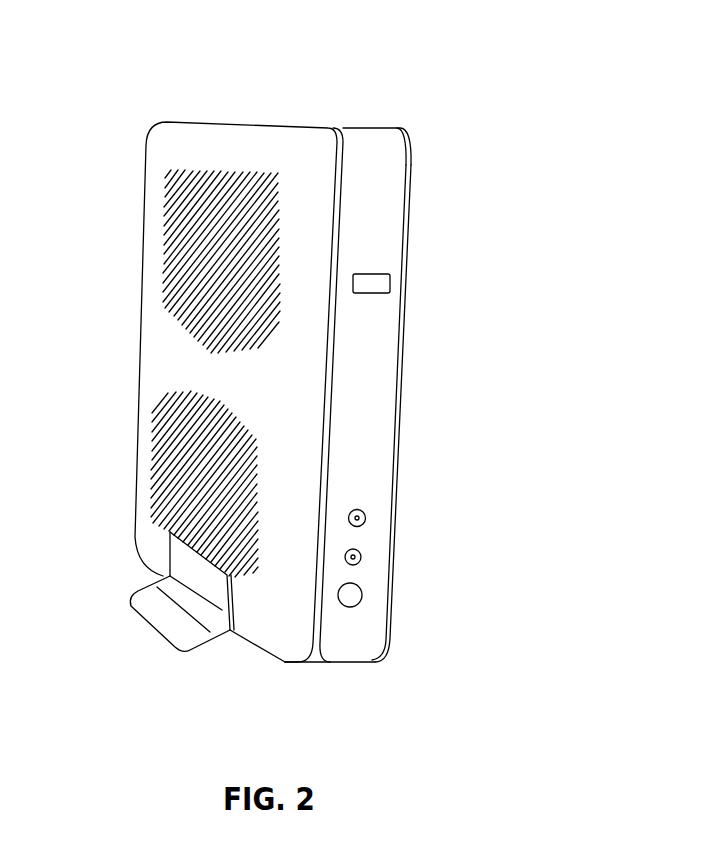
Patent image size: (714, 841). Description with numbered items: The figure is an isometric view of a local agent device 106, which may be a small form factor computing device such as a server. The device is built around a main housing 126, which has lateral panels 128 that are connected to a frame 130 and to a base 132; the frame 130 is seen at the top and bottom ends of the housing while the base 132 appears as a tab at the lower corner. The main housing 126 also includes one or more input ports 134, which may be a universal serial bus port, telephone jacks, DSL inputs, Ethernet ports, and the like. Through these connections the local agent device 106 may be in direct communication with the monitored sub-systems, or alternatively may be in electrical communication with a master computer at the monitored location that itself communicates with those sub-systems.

The local agent device 106 is at (450, 119).
The main housing 126 is at (185, 122).
The lateral panels 128 is at (398, 370).
The frame 130 is at (367, 127).
The base 132 is at (157, 622).
The input ports 134 is at (366, 515).